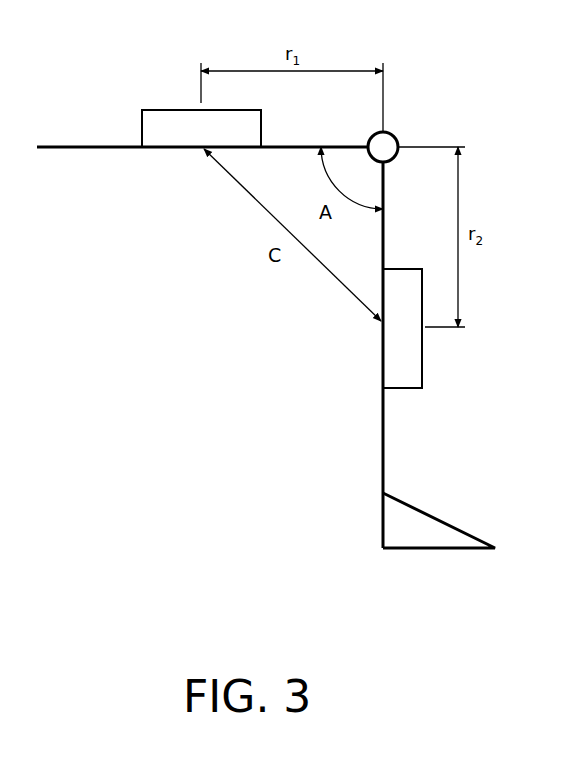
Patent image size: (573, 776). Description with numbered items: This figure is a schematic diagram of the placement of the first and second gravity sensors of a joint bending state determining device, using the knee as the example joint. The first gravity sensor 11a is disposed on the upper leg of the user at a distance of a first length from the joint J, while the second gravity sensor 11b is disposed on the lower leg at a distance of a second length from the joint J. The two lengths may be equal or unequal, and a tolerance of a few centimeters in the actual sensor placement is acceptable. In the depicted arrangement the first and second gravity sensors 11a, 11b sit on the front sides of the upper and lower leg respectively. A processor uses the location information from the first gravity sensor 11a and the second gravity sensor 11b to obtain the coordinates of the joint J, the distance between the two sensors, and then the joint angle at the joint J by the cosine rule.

The first gravity sensor 11a is at (171, 110).
The second gravity sensor 11b is at (422, 359).
The joint J is at (396, 134).